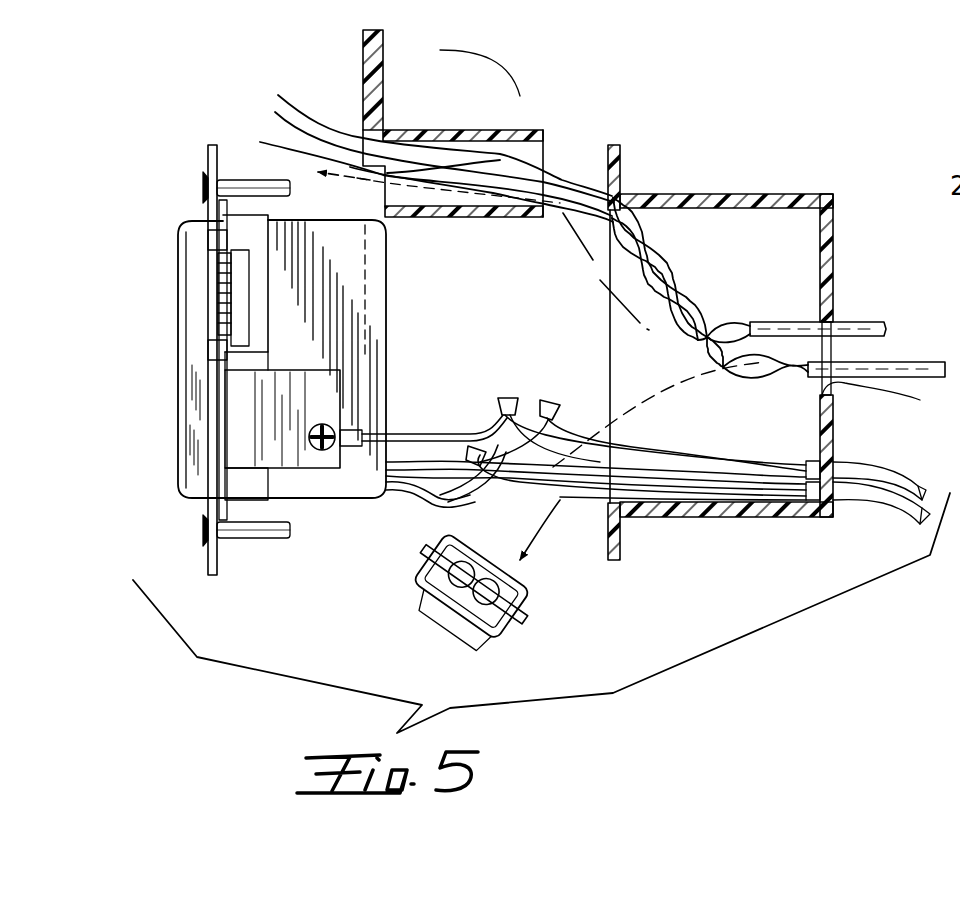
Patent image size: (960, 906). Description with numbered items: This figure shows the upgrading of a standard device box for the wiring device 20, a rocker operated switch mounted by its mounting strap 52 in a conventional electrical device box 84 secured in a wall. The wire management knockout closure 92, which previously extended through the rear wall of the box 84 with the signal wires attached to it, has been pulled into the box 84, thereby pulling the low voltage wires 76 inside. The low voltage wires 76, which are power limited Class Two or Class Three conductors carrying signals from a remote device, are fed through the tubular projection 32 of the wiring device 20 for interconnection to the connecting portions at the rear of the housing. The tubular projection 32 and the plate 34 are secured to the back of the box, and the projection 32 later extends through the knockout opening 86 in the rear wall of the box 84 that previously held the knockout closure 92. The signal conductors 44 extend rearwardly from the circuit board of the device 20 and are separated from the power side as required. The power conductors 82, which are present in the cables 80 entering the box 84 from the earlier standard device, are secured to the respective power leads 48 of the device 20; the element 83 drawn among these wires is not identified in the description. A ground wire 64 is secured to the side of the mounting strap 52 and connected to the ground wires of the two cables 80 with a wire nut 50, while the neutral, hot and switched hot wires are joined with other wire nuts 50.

The wiring device 20 is at (176, 322).
The tubular projection 32 is at (492, 125).
The plate 34 is at (384, 72).
The signal conductors 44 is at (322, 100).
The leads 48 is at (440, 520).
The wire nut 50 is at (515, 396).
The mounting strap 52 is at (222, 575).
The ground wire 64 is at (370, 428).
The low voltage wires 76 is at (852, 318).
The cables 80 is at (870, 458).
The power conductors 82 is at (672, 460).
The wire loop 83 is at (505, 410).
The electrical device box 84 is at (708, 192).
The knockout opening 86 is at (891, 397).
The wire management knockout closure 92 is at (410, 602).